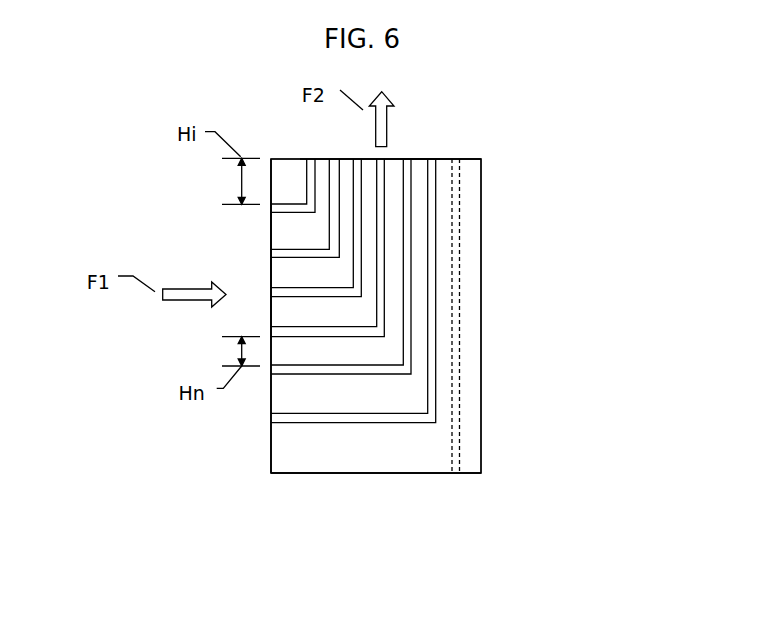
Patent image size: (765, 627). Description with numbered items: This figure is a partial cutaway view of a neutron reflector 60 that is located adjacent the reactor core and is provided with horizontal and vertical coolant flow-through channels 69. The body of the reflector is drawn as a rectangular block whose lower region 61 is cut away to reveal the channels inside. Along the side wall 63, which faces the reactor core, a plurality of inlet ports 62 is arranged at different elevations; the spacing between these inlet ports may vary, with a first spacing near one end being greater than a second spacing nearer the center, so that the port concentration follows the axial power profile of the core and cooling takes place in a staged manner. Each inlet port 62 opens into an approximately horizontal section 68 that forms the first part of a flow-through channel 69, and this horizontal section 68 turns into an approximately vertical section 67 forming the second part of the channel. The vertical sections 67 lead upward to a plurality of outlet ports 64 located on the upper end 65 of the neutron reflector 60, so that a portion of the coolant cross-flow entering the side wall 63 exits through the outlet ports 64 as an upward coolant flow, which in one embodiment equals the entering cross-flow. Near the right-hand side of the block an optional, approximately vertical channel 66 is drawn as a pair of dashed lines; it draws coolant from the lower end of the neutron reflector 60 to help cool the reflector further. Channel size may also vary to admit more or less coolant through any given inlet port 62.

The neutron reflector 60 is at (438, 297).
The housing body 61 is at (376, 343).
The inlet ports 62 is at (234, 316).
The side wall 63 is at (219, 270).
The outlet ports 64 is at (462, 125).
The upper end 65 is at (335, 125).
The optional approximately vertical channel 66 is at (505, 316).
The vertical section 67 is at (349, 286).
The horizontal section 68 is at (353, 311).
The flow-through channels 69 is at (376, 481).